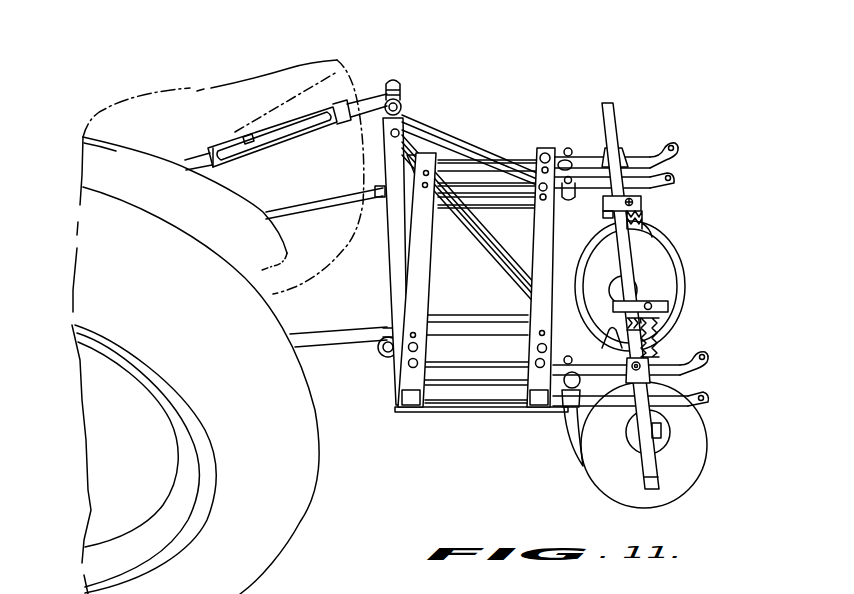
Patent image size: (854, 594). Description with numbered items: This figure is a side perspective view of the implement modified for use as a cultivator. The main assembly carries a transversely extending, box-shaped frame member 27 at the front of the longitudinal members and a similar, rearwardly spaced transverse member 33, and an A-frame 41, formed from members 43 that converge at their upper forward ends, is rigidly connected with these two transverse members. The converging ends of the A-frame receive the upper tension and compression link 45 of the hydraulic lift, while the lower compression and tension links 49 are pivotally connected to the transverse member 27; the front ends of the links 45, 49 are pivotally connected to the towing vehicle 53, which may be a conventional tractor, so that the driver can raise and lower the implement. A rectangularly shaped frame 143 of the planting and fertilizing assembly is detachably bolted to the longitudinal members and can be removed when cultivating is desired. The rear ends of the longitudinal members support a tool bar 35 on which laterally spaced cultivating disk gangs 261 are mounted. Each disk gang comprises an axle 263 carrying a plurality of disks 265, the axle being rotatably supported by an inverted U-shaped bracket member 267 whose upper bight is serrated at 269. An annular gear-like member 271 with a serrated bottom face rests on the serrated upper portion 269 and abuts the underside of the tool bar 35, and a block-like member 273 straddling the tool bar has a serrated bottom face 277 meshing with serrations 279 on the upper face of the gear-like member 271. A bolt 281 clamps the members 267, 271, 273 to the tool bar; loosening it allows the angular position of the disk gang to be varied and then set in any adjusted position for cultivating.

The towing vehicle 53 is at (266, 73).
The lower compression and tension links 49 is at (346, 184).
The upper tension and compression link 45 is at (362, 102).
The A-frame members 43 is at (434, 155).
The A-frame 41 is at (488, 152).
The transverse member 33 is at (528, 290).
The rectangularly shaped frame 143 is at (492, 407).
The box-shaped frame member 27 is at (421, 295).
The cultivating disk gangs 261 is at (663, 235).
The bolt 281 is at (655, 253).
The block-like member 273 is at (660, 284).
The serrated upper portion 269 is at (672, 340).
The axle 263 is at (655, 431).
The tool bar 35 is at (650, 468).
The serrated bottom face 277 is at (655, 303).
The annular gear-like member 271 is at (668, 323).
The serrations 279 is at (618, 327).
The inverted U-shaped bracket member 267 is at (667, 347).
The disks 265 is at (588, 457).